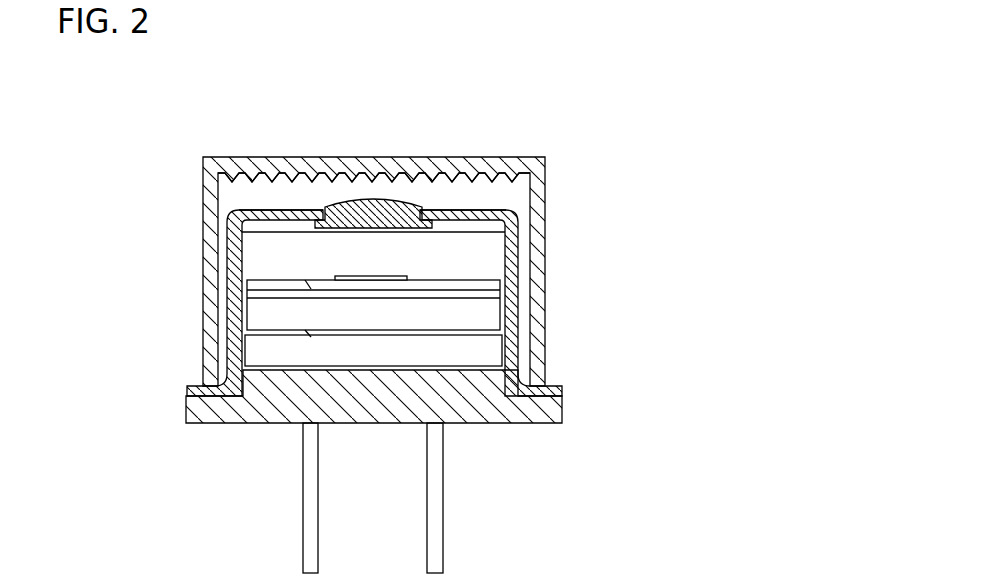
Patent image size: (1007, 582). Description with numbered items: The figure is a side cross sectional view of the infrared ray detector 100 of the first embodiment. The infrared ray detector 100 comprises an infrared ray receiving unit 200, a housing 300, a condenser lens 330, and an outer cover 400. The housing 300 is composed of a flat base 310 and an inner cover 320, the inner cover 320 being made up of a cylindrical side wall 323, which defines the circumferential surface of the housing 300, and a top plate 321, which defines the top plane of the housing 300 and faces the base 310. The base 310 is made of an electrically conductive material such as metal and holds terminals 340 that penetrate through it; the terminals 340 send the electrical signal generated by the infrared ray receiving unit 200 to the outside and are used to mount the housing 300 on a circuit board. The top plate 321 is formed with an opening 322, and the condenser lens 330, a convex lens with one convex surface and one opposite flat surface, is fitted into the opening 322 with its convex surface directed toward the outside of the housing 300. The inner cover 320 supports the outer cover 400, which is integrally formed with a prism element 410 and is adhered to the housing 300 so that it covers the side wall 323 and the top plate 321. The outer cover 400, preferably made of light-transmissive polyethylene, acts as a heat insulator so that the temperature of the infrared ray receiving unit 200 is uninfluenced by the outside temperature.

The infrared ray detector 100 is at (682, 110).
The infrared ray receiving unit 200 is at (407, 278).
The housing 300 is at (768, 303).
The base 310 is at (495, 382).
The inner cover 320 is at (505, 340).
The top plate 321 is at (253, 210).
The opening 322 is at (430, 210).
The cylindrical side wall 323 is at (232, 292).
The condenser lens 330 is at (377, 218).
The terminals 340 is at (310, 502).
The outer cover 400 is at (222, 158).
The prism element 410 is at (340, 178).